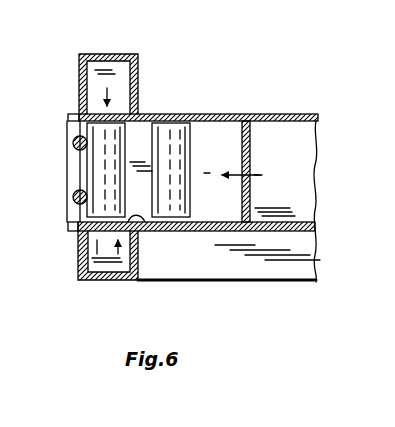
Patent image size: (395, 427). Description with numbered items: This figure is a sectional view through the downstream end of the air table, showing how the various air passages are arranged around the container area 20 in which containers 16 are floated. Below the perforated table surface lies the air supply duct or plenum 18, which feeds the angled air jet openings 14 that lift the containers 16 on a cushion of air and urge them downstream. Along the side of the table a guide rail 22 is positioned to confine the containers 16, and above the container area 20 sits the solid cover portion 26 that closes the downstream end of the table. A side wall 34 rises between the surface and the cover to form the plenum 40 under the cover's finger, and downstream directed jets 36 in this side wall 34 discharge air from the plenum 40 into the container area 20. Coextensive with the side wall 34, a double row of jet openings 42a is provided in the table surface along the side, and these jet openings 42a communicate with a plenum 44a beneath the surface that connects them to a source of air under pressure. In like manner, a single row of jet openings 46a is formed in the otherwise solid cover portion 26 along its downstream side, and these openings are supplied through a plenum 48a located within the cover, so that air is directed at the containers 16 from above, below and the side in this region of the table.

The air jet openings 14 is at (40, 134).
The containers 16 is at (199, 117).
The air supply duct or plenum 18 is at (248, 267).
The container area 20 is at (226, 203).
The guide rails 22 is at (73, 141).
The solid cover portion 26 is at (291, 117).
The side wall 34 is at (252, 156).
The downstream directed jets 36 is at (248, 177).
The plenum 40 is at (298, 176).
The jet openings 42a is at (136, 227).
The plenum 44a is at (112, 280).
The jet openings 46a is at (120, 113).
The plenum 48a is at (129, 64).